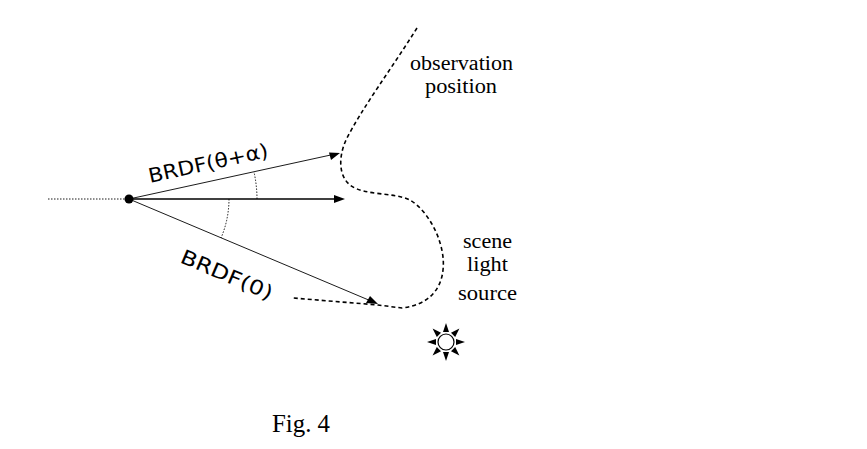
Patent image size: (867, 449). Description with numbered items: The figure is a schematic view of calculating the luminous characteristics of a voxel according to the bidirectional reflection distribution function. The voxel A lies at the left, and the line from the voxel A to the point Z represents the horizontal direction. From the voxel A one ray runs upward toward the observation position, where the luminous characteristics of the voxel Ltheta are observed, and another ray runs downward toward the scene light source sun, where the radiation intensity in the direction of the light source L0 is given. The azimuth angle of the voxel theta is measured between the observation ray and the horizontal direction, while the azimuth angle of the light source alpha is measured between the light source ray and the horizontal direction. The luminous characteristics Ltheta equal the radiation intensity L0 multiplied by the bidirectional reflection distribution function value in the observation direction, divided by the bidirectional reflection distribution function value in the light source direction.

The voxel A is at (128, 216).
The horizontal direction Z is at (255, 213).
The luminous characteristics of the voxel at azimuth angle θ Ltheta is at (260, 167).
The radiation intensity in the direction of the light source L0 is at (271, 263).
The azimuth angle of the voxel theta is at (272, 185).
The azimuth angle of the light source alpha is at (246, 219).
The scene light source sun is at (446, 342).